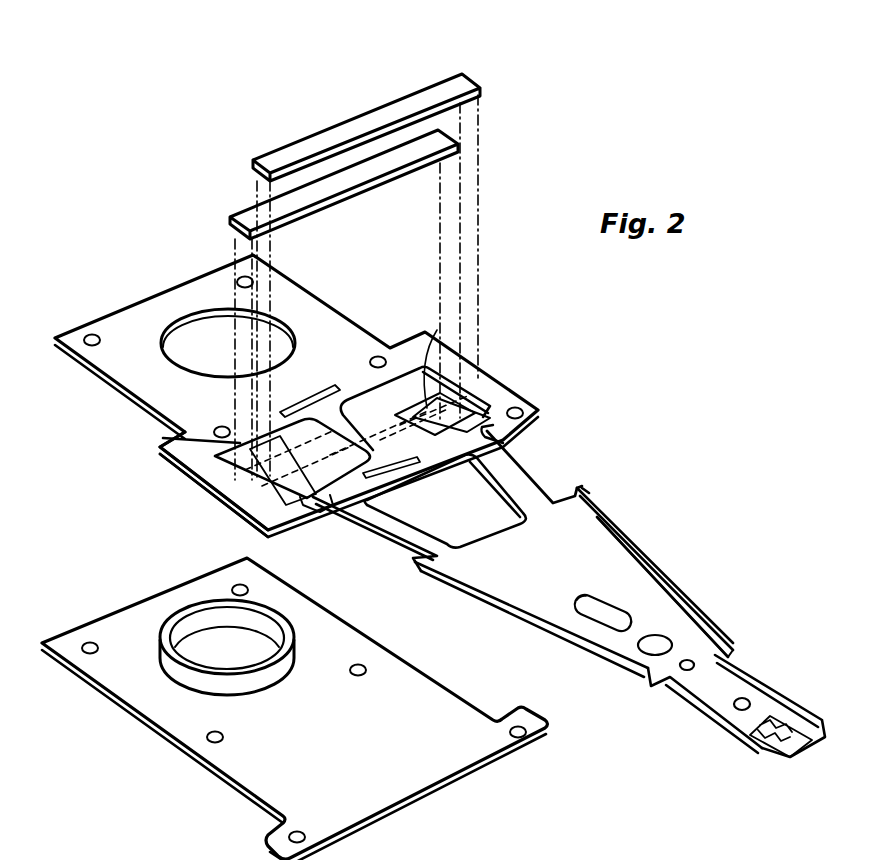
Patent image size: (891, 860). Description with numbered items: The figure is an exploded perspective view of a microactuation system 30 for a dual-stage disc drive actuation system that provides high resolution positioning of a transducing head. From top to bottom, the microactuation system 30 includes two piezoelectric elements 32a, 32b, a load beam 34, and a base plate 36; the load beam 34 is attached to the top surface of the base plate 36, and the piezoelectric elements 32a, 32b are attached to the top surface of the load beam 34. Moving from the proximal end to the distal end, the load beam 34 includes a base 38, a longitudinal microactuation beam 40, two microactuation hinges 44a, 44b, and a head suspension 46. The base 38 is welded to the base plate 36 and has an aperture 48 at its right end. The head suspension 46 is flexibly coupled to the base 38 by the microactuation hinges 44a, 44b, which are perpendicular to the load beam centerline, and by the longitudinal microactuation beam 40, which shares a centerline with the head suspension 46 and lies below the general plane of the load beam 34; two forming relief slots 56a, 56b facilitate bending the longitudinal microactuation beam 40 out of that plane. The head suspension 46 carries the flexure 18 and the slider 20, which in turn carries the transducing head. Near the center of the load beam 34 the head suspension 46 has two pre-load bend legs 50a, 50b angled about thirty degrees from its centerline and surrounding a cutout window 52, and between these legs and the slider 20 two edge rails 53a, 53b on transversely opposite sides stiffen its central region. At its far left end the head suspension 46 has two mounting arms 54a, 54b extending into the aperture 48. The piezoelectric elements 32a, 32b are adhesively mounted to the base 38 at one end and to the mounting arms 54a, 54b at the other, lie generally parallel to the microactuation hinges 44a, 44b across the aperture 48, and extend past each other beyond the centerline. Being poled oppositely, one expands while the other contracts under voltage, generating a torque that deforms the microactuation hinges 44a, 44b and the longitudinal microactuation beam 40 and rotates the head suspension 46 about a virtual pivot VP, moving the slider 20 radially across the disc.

The microactuation system 30 is at (110, 200).
The piezoelectric element 32a is at (418, 96).
The piezoelectric element 32b is at (313, 193).
The base 38 is at (120, 325).
The base plate 36 is at (105, 712).
The load beam 34 is at (585, 378).
The longitudinal microactuation beam 40 is at (352, 393).
The aperture 48 is at (478, 380).
The mounting arm 54a is at (437, 330).
The mounting arm 54b is at (185, 432).
The microactuation hinge 44a is at (538, 432).
The microactuation hinge 44b is at (315, 505).
The forming relief slot 56a is at (308, 397).
The forming relief slot 56b is at (410, 460).
The virtual pivot VP is at (378, 460).
The pre-load bend leg 50a is at (503, 463).
The pre-load bend leg 50b is at (407, 547).
The head suspension 46 is at (592, 536).
The cutout window 52 is at (492, 494).
The edge rail 53a is at (663, 568).
The edge rail 53b is at (640, 673).
The flexure 18 is at (753, 678).
The slider 20 is at (817, 735).